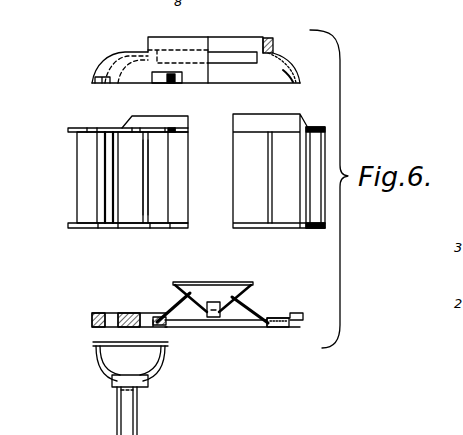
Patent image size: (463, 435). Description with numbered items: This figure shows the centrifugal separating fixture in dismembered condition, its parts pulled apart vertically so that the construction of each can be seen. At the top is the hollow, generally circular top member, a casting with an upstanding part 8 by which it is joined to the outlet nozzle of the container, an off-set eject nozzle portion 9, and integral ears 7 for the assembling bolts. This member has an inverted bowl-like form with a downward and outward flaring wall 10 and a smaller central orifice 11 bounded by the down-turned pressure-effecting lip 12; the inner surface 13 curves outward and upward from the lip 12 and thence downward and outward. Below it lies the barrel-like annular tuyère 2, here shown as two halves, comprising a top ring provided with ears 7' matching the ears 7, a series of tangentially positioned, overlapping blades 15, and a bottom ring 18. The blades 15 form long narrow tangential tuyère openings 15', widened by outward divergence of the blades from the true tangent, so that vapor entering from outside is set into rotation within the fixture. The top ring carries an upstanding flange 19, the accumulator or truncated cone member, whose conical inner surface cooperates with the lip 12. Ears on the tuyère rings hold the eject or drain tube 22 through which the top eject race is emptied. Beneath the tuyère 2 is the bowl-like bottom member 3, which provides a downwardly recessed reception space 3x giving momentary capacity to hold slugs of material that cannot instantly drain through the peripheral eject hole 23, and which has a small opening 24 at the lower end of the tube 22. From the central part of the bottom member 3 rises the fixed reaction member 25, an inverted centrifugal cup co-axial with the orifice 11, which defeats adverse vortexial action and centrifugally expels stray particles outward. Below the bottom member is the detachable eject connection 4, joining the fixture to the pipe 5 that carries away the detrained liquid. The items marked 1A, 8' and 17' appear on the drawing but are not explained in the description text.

The end plate 1A is at (309, 128).
The tuyère 2 is at (233, 185).
The bottom member 3 is at (293, 323).
The reception space 3x is at (275, 318).
The eject connection 4 is at (158, 361).
The pipe 5 is at (137, 408).
The ears 7 is at (131, 161).
The ears 7' is at (155, 113).
The upstanding part 8 is at (279, 35).
The bottom flange 8' is at (115, 224).
The eject nozzle portion 9 is at (108, 70).
The flaring wall 10 is at (282, 62).
The central orifice 11 is at (246, 60).
The pressure-effecting lip 12 is at (262, 66).
The inner surface 13 is at (291, 80).
The tuyère blades 15 is at (197, 177).
The tuyère openings 15' is at (207, 177).
The top flange 17' is at (109, 128).
The bottom ring 18 is at (315, 228).
The upstanding flange 19 is at (145, 122).
The eject tube 22 is at (77, 185).
The eject hole 23 is at (153, 316).
The small opening 24 is at (110, 330).
The reaction member 25 is at (184, 290).